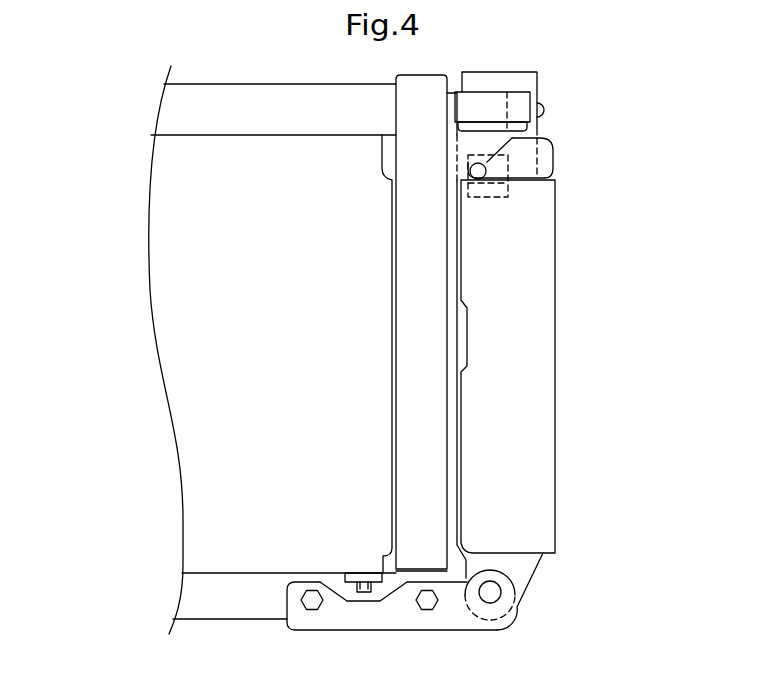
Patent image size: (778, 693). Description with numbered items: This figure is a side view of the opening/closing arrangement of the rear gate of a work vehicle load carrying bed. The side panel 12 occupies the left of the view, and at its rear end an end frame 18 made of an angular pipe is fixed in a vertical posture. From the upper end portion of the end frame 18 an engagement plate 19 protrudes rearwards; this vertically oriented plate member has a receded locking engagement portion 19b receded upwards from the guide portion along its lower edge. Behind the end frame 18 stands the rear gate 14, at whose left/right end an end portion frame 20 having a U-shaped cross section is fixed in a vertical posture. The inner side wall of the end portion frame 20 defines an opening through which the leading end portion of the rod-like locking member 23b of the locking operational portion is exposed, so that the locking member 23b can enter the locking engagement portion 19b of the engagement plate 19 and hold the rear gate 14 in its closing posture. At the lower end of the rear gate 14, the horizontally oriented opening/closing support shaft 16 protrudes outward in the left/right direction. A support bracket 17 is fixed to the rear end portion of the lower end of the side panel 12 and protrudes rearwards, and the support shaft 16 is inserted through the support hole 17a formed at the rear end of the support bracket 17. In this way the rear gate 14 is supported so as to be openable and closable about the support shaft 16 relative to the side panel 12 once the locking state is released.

The side panel 12 is at (183, 272).
The rear gate 14 is at (518, 568).
The opening/closing support shaft 16 is at (491, 590).
The support bracket 17 is at (338, 612).
The support hole 17a is at (503, 590).
The end frame 18 is at (420, 228).
The engagement plate 19 is at (542, 157).
The locking engagement portion 19b is at (480, 180).
The end portion frame 20 is at (530, 357).
The locking member 23b is at (484, 164).